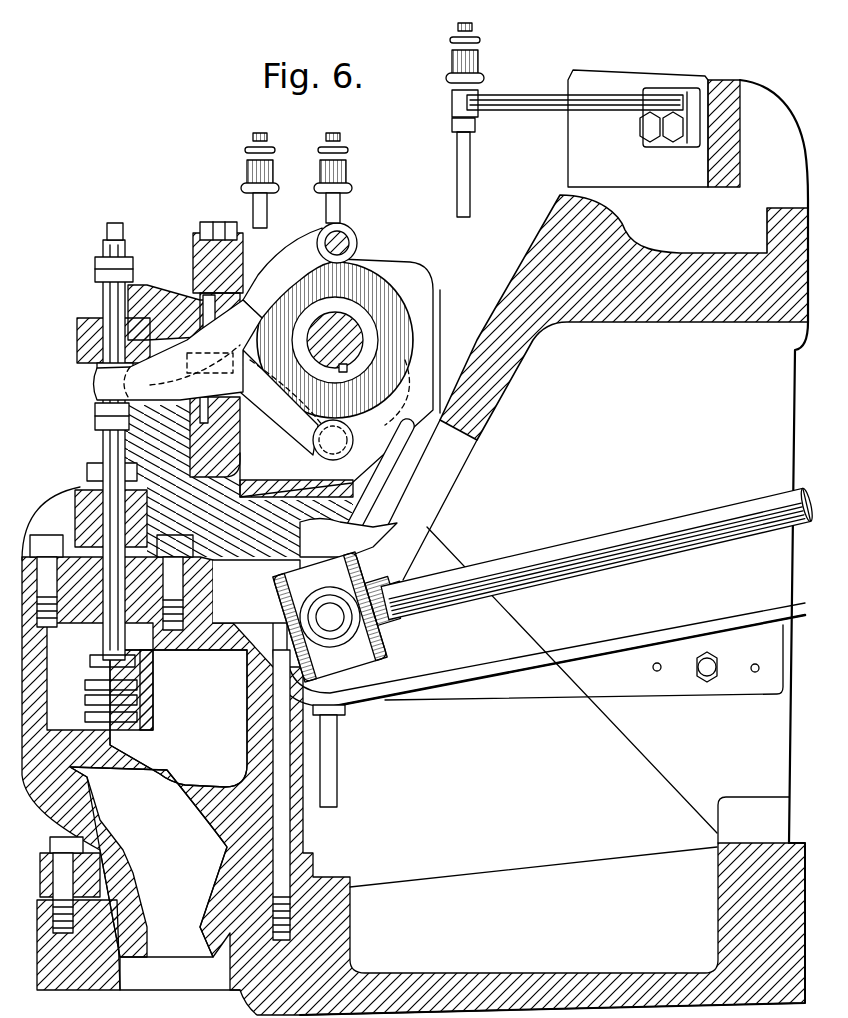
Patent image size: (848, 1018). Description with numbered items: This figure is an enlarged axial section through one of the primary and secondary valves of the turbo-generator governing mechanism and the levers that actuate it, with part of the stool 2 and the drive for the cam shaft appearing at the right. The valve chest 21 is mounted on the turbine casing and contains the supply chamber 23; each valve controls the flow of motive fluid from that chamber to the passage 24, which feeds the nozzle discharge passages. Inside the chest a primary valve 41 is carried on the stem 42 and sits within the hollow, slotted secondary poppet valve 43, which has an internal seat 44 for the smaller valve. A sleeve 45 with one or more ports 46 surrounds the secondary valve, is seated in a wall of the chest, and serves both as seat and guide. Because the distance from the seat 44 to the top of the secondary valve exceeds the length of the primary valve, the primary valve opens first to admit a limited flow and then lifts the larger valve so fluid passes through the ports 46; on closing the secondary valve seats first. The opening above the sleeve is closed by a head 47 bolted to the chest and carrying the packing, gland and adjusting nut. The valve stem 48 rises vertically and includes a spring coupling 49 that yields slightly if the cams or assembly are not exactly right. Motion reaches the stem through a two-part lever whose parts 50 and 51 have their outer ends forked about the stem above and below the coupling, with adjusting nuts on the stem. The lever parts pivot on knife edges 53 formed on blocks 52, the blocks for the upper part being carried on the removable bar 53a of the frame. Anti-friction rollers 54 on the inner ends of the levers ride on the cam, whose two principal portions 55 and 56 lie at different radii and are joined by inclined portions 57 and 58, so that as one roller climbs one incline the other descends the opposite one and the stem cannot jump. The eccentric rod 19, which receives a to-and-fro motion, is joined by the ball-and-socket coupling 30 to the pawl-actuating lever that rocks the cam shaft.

The stool 2 is at (502, 381).
The rod 19 is at (652, 530).
The valve chest 21 is at (33, 783).
The supply chamber 23 is at (178, 718).
The passage 24 is at (148, 862).
The ball-and-socket coupling 30 is at (360, 622).
The primary valve 41 is at (130, 667).
The stem 42 is at (110, 502).
The secondary poppet valve 43 is at (147, 710).
The internal seat 44 is at (147, 692).
The sleeve 45 is at (150, 674).
The port 46 is at (147, 718).
The head 47 is at (203, 586).
The valve stem 48 is at (105, 445).
The spring coupling 49 is at (72, 338).
The lever part 50 is at (158, 300).
The lever part 51 is at (175, 372).
The block 52 is at (198, 298).
The knife edge 53 is at (228, 373).
The removable bar 53a is at (213, 240).
The anti-friction roller 54 is at (356, 252).
The principal cam portion 55 is at (295, 262).
The principal cam portion 56 is at (395, 298).
The inclined portion 57 is at (350, 270).
The inclined portion 58 is at (360, 473).